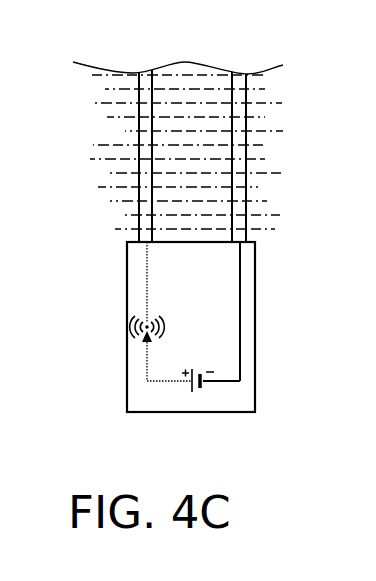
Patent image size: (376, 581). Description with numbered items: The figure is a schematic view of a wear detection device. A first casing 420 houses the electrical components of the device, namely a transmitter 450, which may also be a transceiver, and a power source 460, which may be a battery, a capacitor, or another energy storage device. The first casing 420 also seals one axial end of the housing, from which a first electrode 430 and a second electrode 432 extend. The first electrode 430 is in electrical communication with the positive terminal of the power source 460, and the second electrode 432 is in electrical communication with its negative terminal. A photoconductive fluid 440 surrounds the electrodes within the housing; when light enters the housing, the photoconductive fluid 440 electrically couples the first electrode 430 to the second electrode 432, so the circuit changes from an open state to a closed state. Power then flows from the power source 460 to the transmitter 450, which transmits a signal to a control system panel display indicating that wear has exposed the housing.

The first casing 420 is at (128, 379).
The first electrode 430 is at (152, 172).
The second electrode 432 is at (242, 122).
The photoconductive fluid 440 is at (173, 129).
The transmitter 450 is at (133, 330).
The power source 460 is at (190, 392).